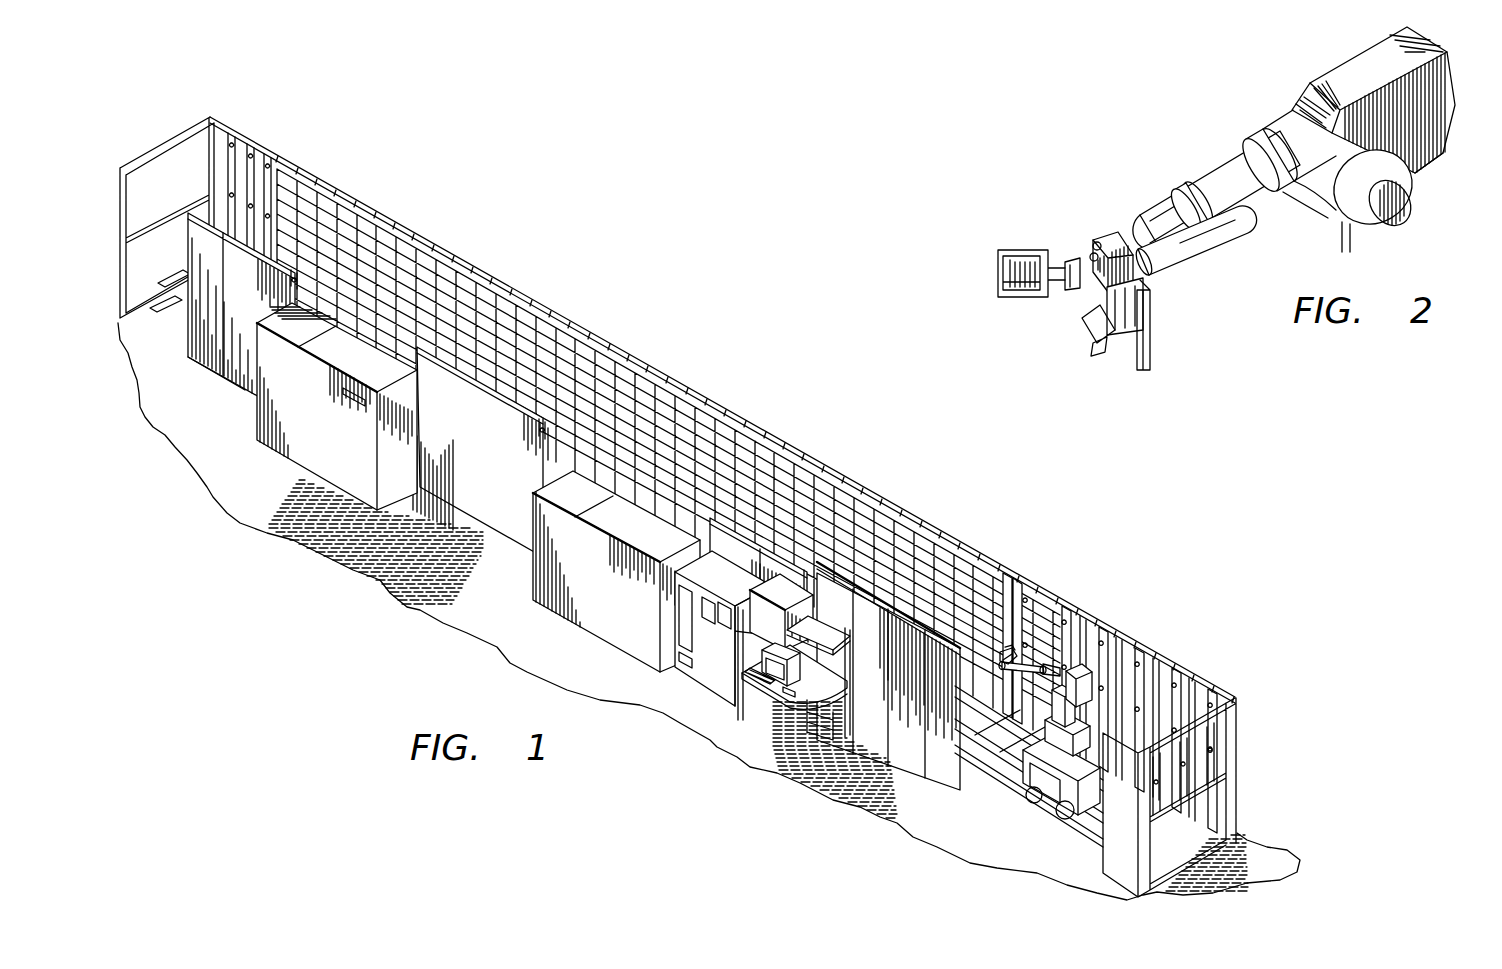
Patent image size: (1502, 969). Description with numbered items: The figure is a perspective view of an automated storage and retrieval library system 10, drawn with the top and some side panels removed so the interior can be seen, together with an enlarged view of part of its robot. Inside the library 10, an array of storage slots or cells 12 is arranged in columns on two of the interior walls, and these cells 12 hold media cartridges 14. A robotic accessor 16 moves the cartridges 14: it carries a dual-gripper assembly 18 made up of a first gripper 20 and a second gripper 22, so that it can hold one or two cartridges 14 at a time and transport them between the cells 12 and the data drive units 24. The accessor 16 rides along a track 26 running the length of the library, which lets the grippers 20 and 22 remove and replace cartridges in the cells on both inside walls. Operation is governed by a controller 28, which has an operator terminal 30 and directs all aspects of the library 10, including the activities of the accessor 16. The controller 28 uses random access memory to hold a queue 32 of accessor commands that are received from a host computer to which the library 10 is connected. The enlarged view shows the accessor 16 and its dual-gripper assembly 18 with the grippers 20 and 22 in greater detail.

In FIG. 1, the automated storage and retrieval library system 10 is at (466, 240).
In FIG. 1, the storage slots or cells 12 is at (672, 393).
In FIG. 1, the media cartridges 14 is at (835, 490).
In FIG. 1, the robotic accessor 16 is at (1073, 676).
In FIG. 2, the robotic accessor 16 is at (1447, 70).
In FIG. 1, the dual-gripper assembly 18 is at (1004, 658).
In FIG. 2, the dual-gripper assembly 18 is at (1068, 234).
In FIG. 2, the first gripper 20 is at (1000, 276).
In FIG. 2, the second gripper 22 is at (1152, 350).
In FIG. 1, the data drive units 24 is at (285, 455).
In FIG. 1, the track 26 is at (1000, 745).
In FIG. 1, the controller 28 is at (776, 668).
In FIG. 1, the operator terminal 30 is at (775, 690).
In FIG. 1, the queue of accessor commands 32 is at (705, 682).